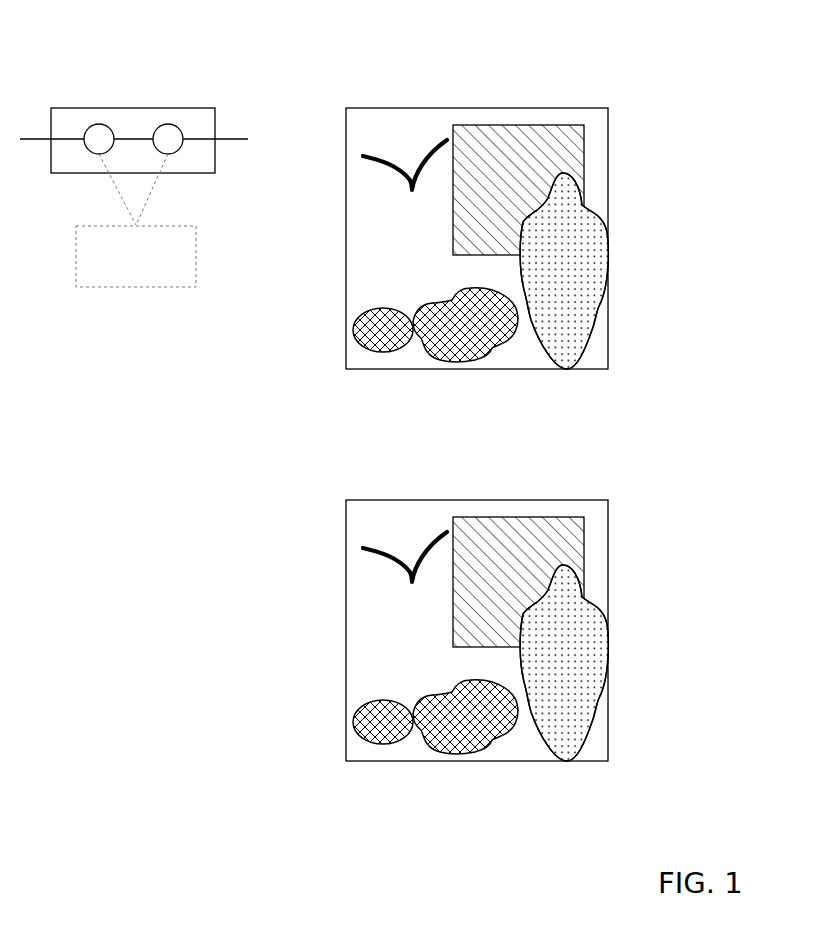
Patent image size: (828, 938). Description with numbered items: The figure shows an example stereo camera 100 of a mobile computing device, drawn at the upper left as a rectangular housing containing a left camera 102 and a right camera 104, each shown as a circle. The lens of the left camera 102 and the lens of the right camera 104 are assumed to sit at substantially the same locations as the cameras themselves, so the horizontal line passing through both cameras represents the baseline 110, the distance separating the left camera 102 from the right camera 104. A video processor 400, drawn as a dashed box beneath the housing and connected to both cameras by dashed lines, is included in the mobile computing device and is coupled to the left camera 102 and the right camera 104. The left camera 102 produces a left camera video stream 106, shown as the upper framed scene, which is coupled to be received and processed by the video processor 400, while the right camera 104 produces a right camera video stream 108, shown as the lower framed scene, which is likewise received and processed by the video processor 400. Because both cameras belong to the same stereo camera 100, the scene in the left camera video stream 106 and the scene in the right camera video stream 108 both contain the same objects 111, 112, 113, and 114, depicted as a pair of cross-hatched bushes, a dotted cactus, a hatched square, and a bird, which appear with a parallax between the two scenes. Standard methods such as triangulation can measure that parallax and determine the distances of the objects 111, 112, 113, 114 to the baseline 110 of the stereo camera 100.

The stereo camera 100 is at (192, 108).
The left camera 102 is at (100, 124).
The right camera 104 is at (163, 124).
The baseline 110 is at (133, 140).
The video processor 400 is at (192, 253).
The left camera video stream 106 is at (374, 62).
The right camera video stream 108 is at (449, 585).
The object 111 is at (380, 307).
The object 112 is at (595, 218).
The object 113 is at (532, 125).
The object 114 is at (377, 155).